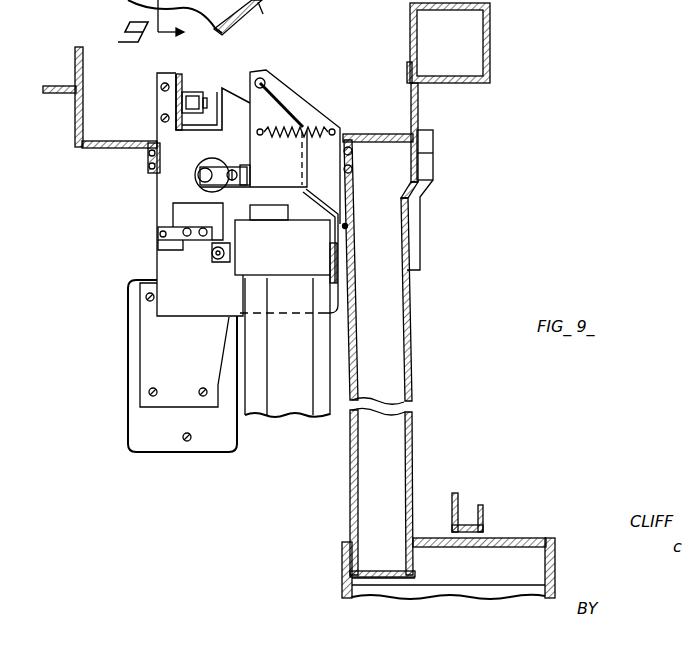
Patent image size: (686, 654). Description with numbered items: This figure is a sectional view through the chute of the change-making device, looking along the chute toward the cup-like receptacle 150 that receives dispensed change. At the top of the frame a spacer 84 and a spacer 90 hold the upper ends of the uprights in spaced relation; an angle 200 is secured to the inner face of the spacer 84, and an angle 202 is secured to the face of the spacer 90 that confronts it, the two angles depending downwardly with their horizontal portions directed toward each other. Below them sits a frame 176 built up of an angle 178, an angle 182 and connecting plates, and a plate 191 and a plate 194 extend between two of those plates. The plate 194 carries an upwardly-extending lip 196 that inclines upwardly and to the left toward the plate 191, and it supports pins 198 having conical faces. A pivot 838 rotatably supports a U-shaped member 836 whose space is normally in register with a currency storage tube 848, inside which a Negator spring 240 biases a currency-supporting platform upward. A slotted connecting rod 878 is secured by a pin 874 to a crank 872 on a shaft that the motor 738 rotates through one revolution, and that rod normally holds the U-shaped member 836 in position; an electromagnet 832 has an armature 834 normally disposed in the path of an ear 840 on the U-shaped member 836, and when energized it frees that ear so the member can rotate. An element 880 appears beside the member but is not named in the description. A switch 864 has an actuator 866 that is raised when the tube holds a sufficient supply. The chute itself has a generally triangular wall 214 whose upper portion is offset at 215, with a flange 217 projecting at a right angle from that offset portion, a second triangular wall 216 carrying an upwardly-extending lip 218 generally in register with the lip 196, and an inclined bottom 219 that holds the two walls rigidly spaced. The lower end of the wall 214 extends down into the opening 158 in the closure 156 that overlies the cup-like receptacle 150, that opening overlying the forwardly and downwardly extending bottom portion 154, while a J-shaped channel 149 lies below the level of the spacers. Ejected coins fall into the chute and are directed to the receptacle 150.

The cup-like receptacle 150 is at (110, 0).
The forwardly and downwardly extending portion 154 is at (247, 12).
The spacer 84 is at (75, 78).
The angle 200 is at (84, 96).
The frame 176 is at (140, 126).
The angle 178 is at (148, 168).
The plate 191 is at (173, 73).
The electromagnet 832 is at (193, 90).
The ear 840 is at (222, 88).
The pivot 838 is at (266, 76).
The U-shaped member 836 is at (281, 107).
The spring 880 is at (312, 130).
The crank 872 is at (222, 157).
The pin 874 is at (200, 184).
The slotted connecting rod 878 is at (242, 188).
The armature 834 is at (222, 113).
The switch 864 is at (173, 214).
The actuator 866 is at (203, 255).
The Negator spring 240 is at (262, 216).
The currency storage tube 848 is at (260, 416).
The motor 738 is at (142, 430).
The lip 196 is at (310, 194).
The pins 198 is at (340, 298).
The plate 194 is at (348, 264).
The second wall 216 is at (357, 397).
The wall 214 is at (407, 387).
The angle 182 is at (353, 157).
The lip 218 is at (347, 228).
The spacer 90 is at (490, 37).
The angle 202 is at (412, 84).
The offset portion 215 is at (433, 150).
The flange 217 is at (432, 196).
The inclined bottom 219 is at (420, 228).
The opening 158 is at (348, 543).
The channel 149 is at (481, 512).
The closure 156 is at (533, 540).